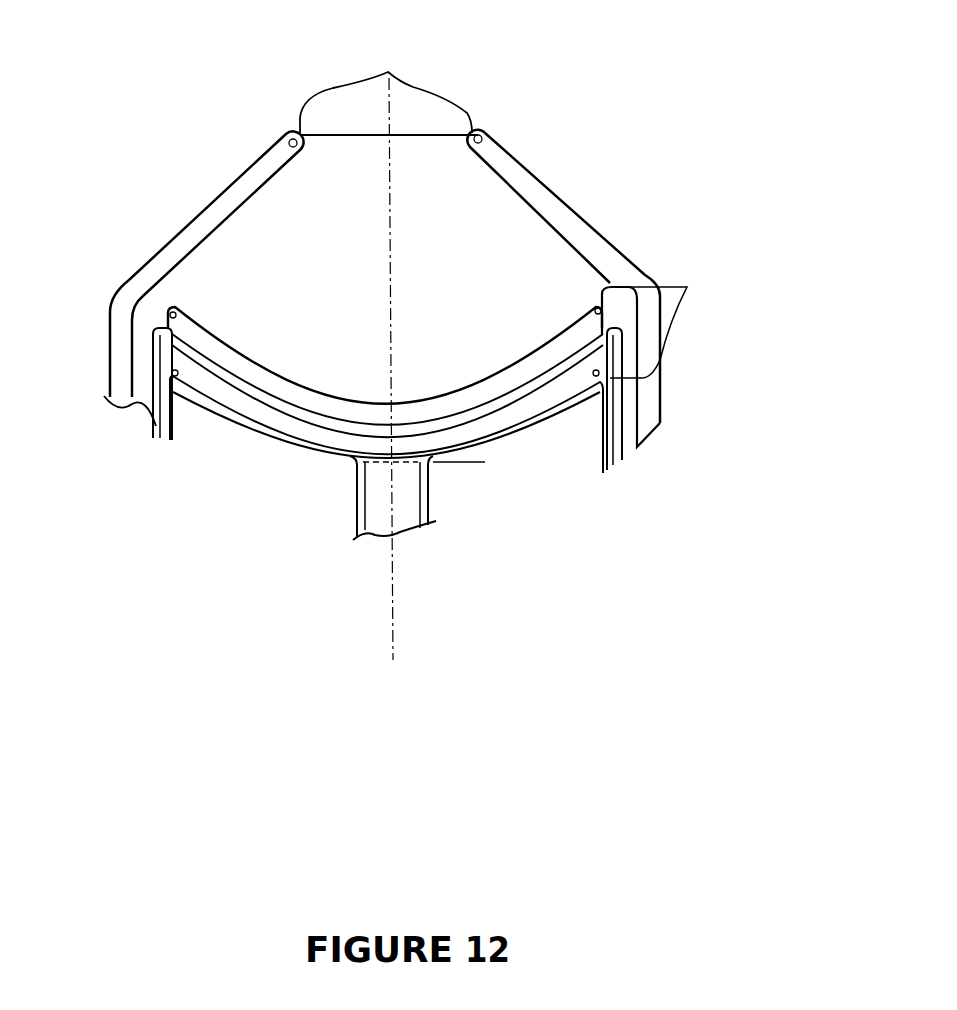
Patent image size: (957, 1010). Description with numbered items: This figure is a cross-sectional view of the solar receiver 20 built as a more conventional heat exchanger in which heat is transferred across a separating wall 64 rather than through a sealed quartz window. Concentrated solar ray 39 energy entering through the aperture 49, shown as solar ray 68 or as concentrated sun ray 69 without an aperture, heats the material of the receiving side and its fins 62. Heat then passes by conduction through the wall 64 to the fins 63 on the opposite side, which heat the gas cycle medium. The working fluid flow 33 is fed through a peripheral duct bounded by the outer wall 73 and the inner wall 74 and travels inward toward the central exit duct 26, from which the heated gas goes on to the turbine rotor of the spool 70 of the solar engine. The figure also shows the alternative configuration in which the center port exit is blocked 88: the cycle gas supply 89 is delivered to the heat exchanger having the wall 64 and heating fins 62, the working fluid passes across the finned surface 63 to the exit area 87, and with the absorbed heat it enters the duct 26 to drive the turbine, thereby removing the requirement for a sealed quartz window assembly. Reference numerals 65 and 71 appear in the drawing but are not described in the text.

The solar receiver 20 is at (681, 418).
The duct 26 is at (408, 543).
The fluid flow 33 is at (167, 447).
The concentrated solar ray 39 is at (364, 113).
The aperture 49 is at (386, 89).
The fins 62 is at (260, 393).
The fins 63 is at (292, 432).
The separating wall 64 is at (497, 410).
The lower flange front edge 65 is at (328, 458).
The solar ray 68 is at (312, 290).
The concentrated sun ray 69 is at (484, 287).
The spool 70 is at (653, 348).
The support arm 71 is at (230, 197).
The outer wall 73 is at (127, 417).
The inner wall 74 is at (597, 442).
The exit area 87 is at (163, 550).
The blocked center port exit 88 is at (445, 465).
The cycle gas supply 89 is at (622, 553).